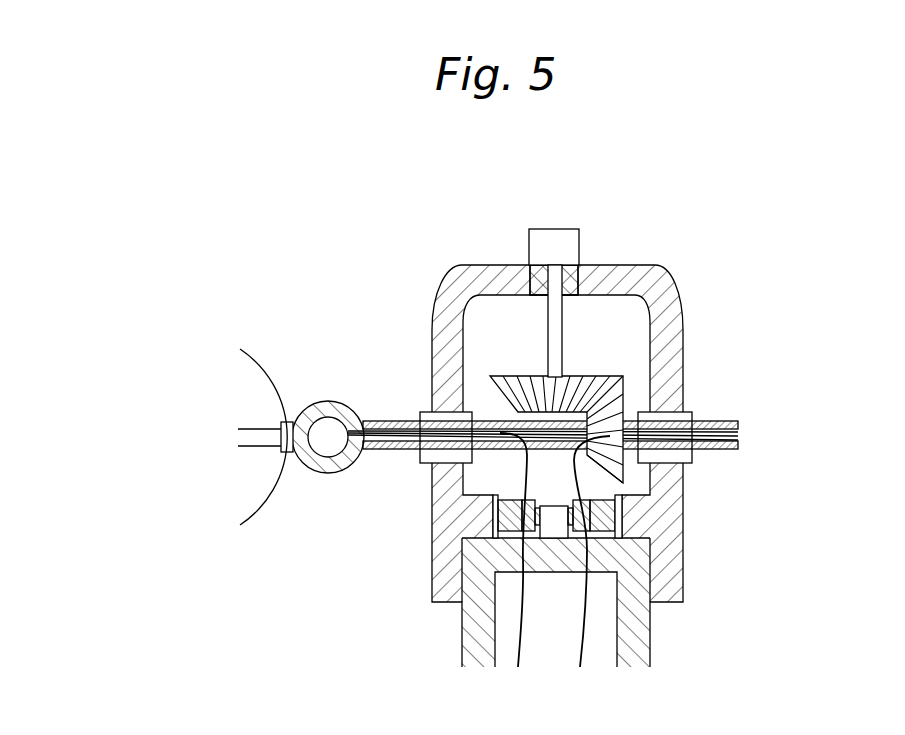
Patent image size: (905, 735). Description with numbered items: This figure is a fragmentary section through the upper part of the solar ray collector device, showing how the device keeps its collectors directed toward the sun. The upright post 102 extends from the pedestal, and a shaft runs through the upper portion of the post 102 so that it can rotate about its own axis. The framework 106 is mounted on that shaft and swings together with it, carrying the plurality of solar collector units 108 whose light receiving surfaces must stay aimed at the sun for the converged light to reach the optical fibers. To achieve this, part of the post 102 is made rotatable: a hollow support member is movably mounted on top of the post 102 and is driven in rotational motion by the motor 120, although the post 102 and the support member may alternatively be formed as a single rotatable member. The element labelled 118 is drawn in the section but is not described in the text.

The post 102 is at (673, 292).
The framework 106 is at (332, 402).
The solar collector units 108 is at (257, 500).
The adjustment knob 118 is at (558, 235).
The motor 120 is at (557, 532).